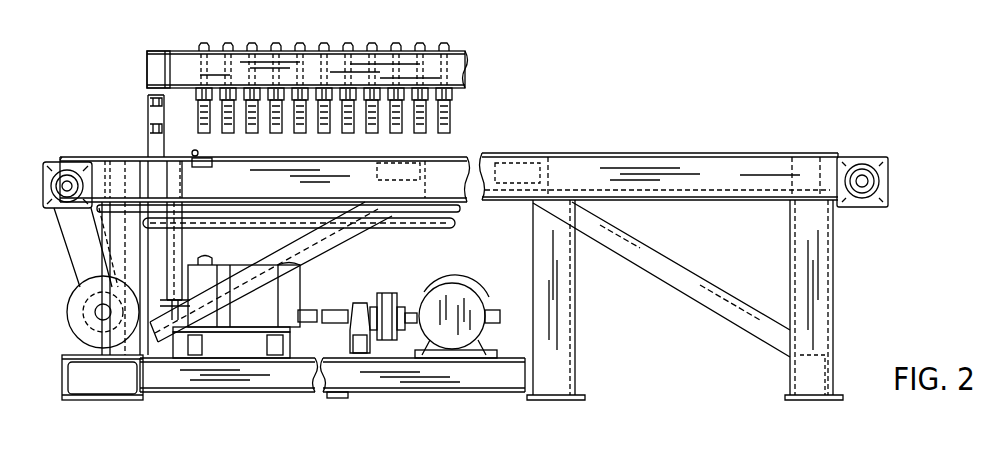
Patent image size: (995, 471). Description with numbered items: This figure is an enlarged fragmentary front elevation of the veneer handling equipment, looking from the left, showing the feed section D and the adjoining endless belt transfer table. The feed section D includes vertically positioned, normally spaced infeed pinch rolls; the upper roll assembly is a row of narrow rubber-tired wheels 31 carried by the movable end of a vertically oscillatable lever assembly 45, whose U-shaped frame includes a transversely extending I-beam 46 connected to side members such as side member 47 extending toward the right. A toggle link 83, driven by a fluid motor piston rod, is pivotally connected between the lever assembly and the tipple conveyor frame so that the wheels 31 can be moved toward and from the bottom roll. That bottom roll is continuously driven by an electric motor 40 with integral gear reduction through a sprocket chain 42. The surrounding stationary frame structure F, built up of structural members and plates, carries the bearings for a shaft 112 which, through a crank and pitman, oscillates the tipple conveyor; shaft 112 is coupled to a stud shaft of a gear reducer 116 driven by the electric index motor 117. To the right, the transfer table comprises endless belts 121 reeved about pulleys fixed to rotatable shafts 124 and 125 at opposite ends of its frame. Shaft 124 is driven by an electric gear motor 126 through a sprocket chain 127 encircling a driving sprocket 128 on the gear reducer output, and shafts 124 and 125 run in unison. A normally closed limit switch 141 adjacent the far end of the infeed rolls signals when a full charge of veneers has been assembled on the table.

The lever assembly 45 is at (193, 30).
The I-beam 46 is at (467, 75).
The side member 47 is at (147, 70).
The rubber-tired wheels 31 is at (204, 135).
The toggle link 83 is at (148, 122).
The limit switch 141 is at (202, 166).
The feed section D is at (72, 151).
The shaft 124 is at (44, 191).
The sprocket chain 127 is at (66, 256).
The electric gear motor 126 is at (70, 310).
The driving sprocket 128 is at (70, 347).
The sprocket chain 42 is at (183, 250).
The electric motor 40 is at (300, 280).
The shaft 112 is at (348, 310).
The gear reducer 116 is at (462, 278).
The electric motor 117 is at (472, 302).
The endless belts 121 is at (748, 153).
The shaft 125 is at (890, 186).
The stationary frame structure F is at (702, 276).